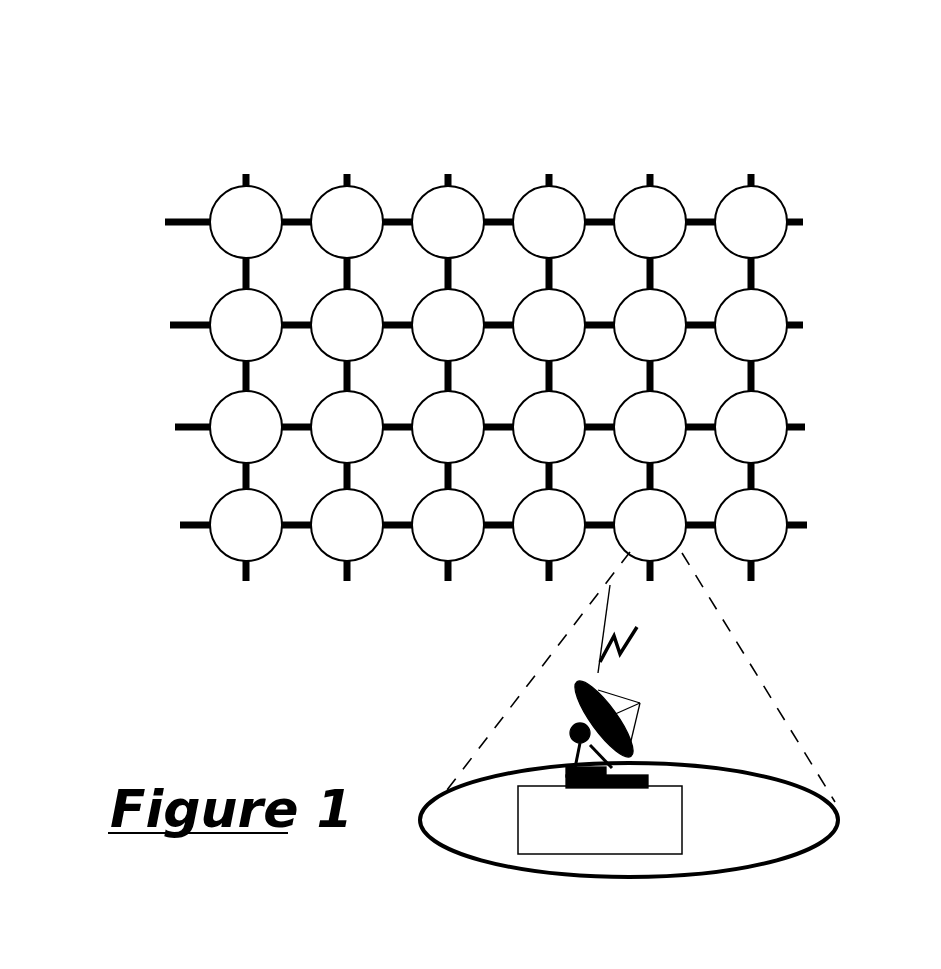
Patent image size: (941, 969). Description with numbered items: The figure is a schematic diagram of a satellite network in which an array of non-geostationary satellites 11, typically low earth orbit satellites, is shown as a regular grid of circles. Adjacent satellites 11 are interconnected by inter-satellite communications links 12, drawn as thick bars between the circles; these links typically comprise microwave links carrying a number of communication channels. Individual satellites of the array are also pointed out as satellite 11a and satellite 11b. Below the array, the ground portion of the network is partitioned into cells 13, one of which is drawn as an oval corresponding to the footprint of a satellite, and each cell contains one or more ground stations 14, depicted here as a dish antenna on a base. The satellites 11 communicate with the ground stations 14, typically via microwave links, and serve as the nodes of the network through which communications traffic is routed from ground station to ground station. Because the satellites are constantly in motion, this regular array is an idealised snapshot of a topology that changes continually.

The non-geostationary satellites 11 is at (222, 268).
The satellite beam / coverage 11a is at (528, 618).
The satellite 11b is at (777, 260).
The inter-satellite communications links 12 is at (698, 215).
The cells 13 is at (553, 548).
The ground stations 14 is at (660, 735).